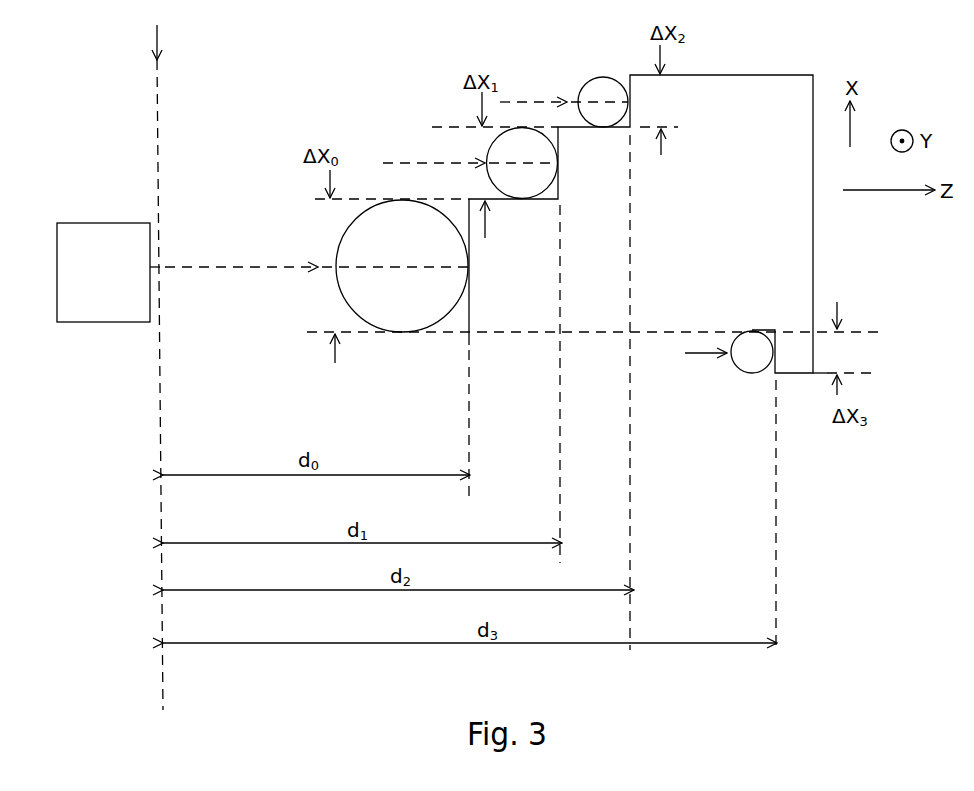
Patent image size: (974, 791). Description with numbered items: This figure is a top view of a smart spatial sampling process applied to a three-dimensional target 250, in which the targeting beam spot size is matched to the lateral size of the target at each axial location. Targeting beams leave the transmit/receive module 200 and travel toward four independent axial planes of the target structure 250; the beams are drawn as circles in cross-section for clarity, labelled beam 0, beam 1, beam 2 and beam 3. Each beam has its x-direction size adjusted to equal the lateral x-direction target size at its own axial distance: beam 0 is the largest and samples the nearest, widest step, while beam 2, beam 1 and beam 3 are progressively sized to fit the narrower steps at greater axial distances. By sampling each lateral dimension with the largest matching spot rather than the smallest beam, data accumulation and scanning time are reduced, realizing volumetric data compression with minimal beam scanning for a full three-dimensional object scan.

The transmit/receive module 200 is at (122, 228).
The stepped target 250 is at (753, 78).
The beam 0 is at (358, 296).
The beam 1 is at (603, 74).
The beam 2 is at (522, 182).
The beam 3 is at (746, 360).